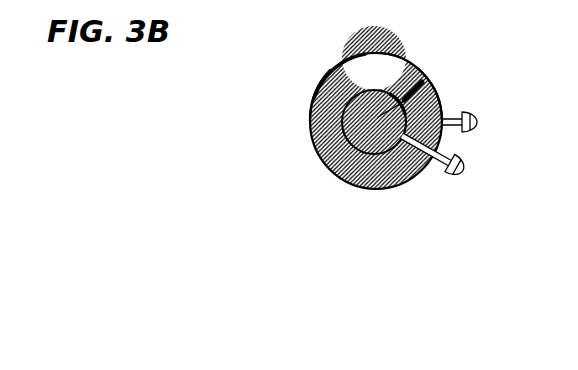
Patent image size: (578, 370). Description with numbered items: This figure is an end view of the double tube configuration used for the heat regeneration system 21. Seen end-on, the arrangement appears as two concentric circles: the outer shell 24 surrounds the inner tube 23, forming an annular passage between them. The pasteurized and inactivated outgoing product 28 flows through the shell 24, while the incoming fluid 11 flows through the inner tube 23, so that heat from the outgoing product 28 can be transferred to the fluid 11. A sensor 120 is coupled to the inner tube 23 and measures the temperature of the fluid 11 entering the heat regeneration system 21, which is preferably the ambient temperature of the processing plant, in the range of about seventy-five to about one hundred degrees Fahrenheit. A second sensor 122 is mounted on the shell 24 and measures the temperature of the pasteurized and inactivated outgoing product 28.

The fluid 11 is at (419, 75).
The heat regeneration system 21 is at (329, 195).
The inner tube 23 is at (356, 135).
The shell 24 is at (360, 59).
The pasteurized and inactivated outgoing product 28 is at (316, 103).
The sensor 120 is at (461, 177).
The sensor 122 is at (477, 116).